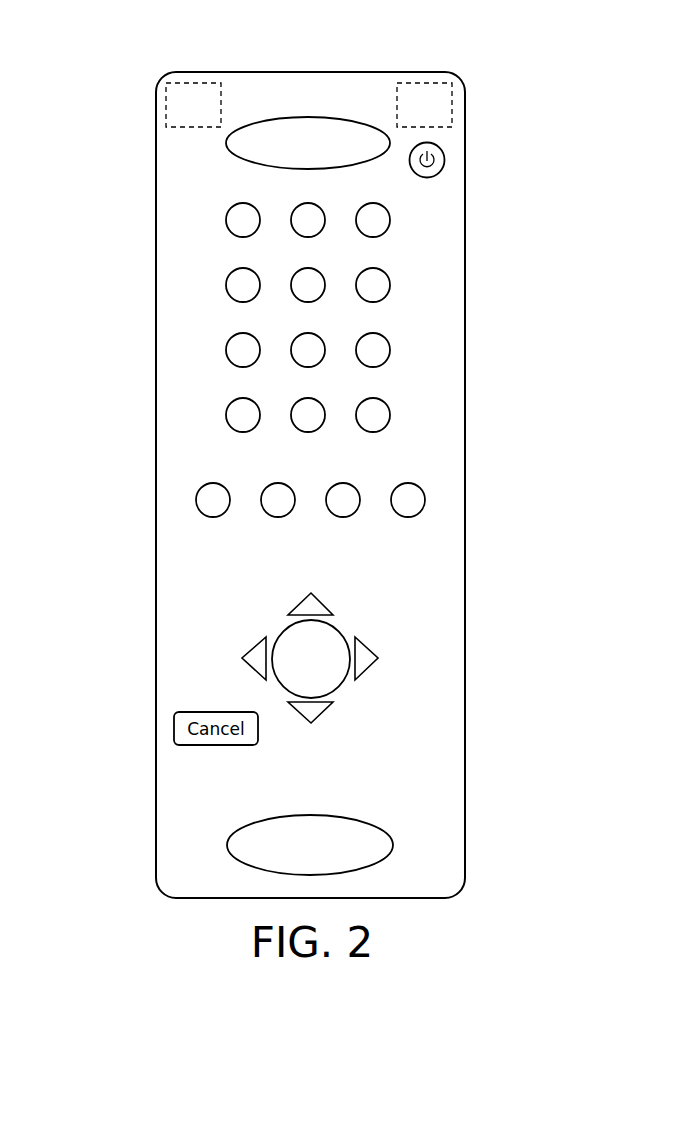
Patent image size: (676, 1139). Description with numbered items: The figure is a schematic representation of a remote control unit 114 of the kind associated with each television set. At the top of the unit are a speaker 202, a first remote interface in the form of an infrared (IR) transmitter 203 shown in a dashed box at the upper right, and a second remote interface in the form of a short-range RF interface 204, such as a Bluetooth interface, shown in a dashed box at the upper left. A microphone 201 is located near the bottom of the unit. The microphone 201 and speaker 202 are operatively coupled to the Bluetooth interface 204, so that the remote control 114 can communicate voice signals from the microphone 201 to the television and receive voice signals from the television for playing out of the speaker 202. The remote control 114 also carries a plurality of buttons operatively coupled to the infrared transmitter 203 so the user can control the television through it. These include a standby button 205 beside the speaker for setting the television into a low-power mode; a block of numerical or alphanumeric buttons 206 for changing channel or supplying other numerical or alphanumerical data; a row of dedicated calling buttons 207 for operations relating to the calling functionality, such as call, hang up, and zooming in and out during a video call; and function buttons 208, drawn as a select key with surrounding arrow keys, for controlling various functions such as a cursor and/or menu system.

The remote control unit 114 is at (120, 187).
The microphone 201 is at (393, 846).
The speaker 202 is at (312, 117).
The infrared transmitter 203 is at (431, 82).
The short-range RF interface 204 is at (198, 82).
The standby button 205 is at (445, 162).
The numerical or alphanumeric buttons 206 is at (470, 193).
The dedicated calling buttons 207 is at (470, 473).
The function buttons 208 is at (470, 593).